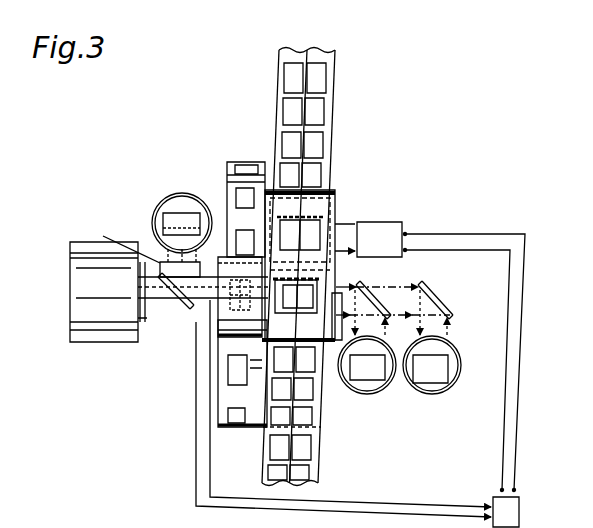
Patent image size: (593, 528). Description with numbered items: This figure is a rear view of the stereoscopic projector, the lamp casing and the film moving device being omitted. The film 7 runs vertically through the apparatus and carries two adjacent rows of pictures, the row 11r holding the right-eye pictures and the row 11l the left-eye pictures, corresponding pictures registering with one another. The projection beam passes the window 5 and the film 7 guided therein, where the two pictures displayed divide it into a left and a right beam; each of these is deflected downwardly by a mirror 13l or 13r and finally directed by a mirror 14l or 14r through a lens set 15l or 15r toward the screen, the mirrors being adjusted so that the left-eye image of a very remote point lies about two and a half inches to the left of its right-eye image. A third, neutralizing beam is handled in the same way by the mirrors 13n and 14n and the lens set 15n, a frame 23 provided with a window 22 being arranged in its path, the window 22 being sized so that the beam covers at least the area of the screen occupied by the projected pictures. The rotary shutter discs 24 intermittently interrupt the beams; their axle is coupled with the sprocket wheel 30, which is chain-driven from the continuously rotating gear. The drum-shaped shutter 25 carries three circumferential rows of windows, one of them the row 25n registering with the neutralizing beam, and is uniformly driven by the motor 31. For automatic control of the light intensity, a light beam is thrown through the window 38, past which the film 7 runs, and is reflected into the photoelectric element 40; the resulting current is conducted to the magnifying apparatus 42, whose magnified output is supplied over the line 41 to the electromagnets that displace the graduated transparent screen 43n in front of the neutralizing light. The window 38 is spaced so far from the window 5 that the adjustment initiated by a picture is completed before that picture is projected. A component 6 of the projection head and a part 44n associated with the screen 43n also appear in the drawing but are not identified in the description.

The window 5 is at (317, 287).
The optical head housing 6 is at (335, 212).
The film 7 is at (329, 112).
The row of left-eye pictures 11l is at (297, 49).
The row of right-eye pictures 11r is at (318, 49).
The mirror 13l is at (373, 291).
The mirror 13r is at (437, 301).
The mirror 13n is at (186, 306).
The mirror 14l is at (364, 382).
The mirror 14r is at (447, 358).
The mirror 14n is at (164, 220).
The lens set 15l is at (377, 393).
The lens set 15r is at (462, 381).
The lens set 15n is at (190, 186).
The window 22 is at (222, 315).
The frame 23 is at (234, 345).
The discs 24 is at (240, 366).
The drum-shaped shutter 25 is at (256, 430).
The row of windows 25n is at (231, 391).
The sprocket wheel 30 is at (141, 322).
The motor 31 is at (104, 292).
The window 38 is at (306, 214).
The photoelectric element 40 is at (379, 239).
The line 41 is at (522, 375).
The magnifying apparatus 42 is at (506, 512).
The transparent screen 43n is at (161, 262).
The lever 44n is at (122, 243).